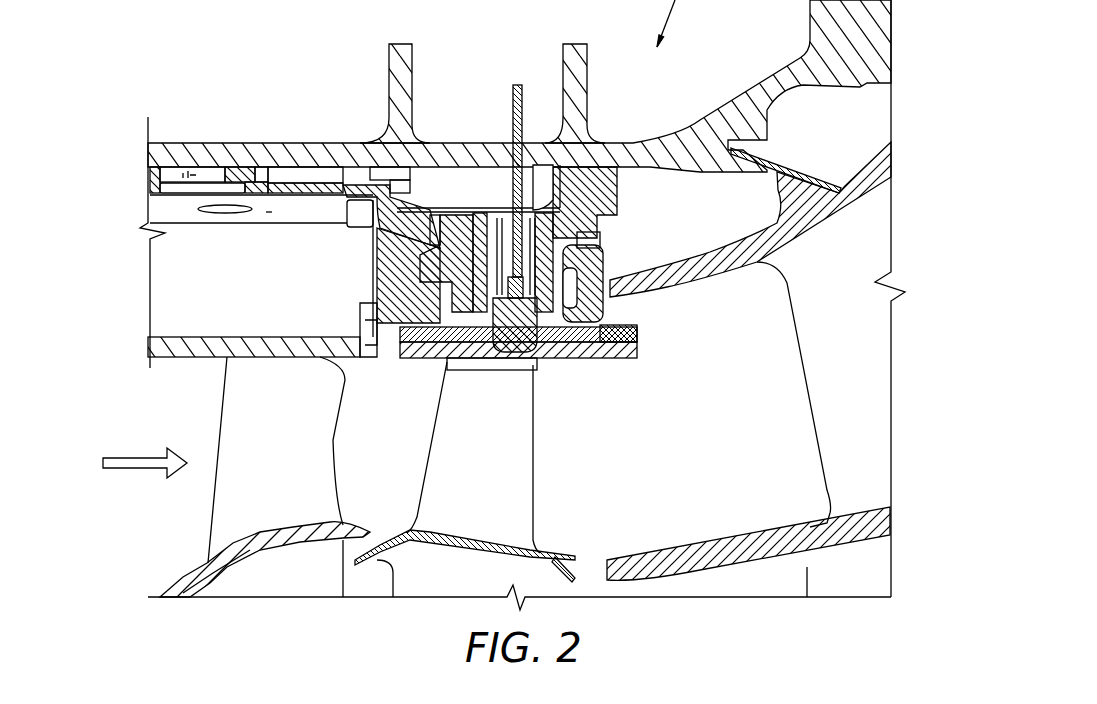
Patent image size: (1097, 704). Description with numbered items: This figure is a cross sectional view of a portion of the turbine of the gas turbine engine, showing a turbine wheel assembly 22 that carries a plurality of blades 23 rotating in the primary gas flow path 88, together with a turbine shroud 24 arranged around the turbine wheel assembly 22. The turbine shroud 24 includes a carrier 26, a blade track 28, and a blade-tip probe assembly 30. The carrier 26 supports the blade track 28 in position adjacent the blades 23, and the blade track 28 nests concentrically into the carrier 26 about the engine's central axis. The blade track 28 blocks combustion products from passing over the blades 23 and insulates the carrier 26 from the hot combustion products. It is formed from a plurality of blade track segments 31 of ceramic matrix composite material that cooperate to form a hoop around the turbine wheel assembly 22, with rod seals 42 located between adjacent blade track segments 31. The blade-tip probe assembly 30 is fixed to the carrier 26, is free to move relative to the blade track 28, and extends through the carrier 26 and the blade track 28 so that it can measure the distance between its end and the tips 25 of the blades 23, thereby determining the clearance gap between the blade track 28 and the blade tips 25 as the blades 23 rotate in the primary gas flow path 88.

The turbine wheel assembly 22 is at (581, 527).
The blades 23 is at (450, 443).
The turbine shroud 24 is at (430, 185).
The tips 25 is at (497, 385).
The carrier 26 is at (360, 268).
The blade track 28 is at (607, 262).
The blade-tip probe assembly 30 is at (494, 221).
The blade track segments 31 is at (633, 367).
The rod seals 42 is at (641, 315).
The primary gas flow path 88 is at (130, 452).